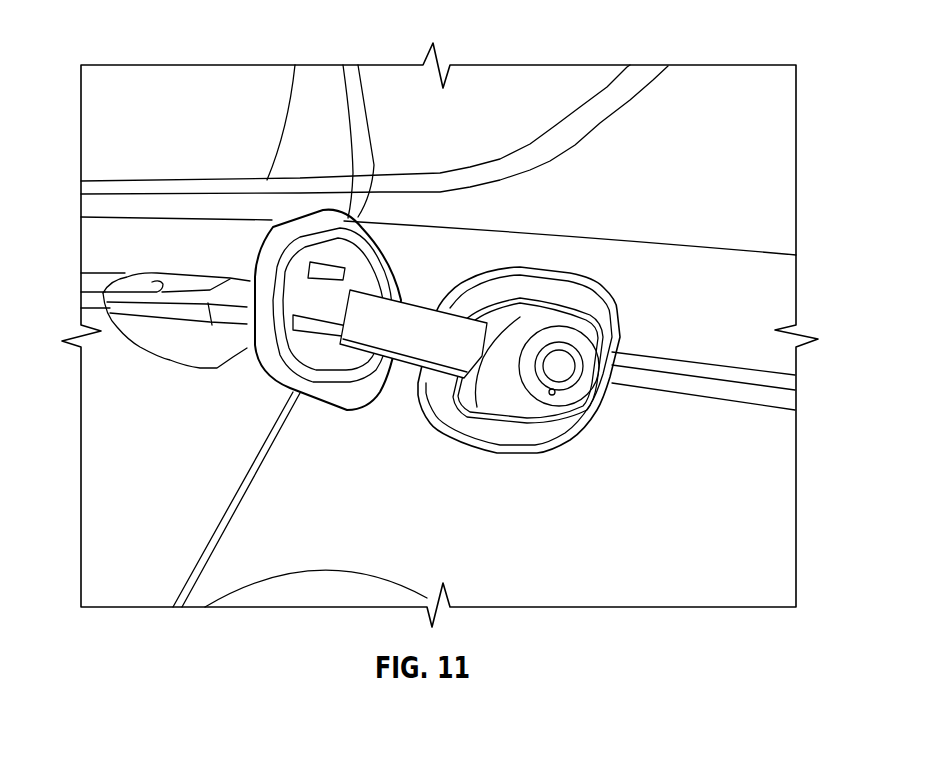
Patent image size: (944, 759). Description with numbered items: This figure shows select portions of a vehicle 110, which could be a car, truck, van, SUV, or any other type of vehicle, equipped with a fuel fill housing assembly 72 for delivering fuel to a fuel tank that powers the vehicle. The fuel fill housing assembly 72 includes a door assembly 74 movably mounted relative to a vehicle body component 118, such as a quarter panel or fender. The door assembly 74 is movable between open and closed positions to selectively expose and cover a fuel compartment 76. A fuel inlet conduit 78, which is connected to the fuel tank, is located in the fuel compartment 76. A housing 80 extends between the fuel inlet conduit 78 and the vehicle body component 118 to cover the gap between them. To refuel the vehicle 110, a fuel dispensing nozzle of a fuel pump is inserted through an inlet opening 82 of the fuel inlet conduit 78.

The vehicle 110 is at (778, 53).
The fuel fill housing assembly 72 is at (740, 297).
The door assembly 74 is at (384, 242).
The fuel compartment 76 is at (557, 312).
The fuel inlet conduit 78 is at (580, 386).
The housing 80 is at (522, 302).
The inlet opening 82 is at (563, 368).
The vehicle body component 118 is at (785, 369).